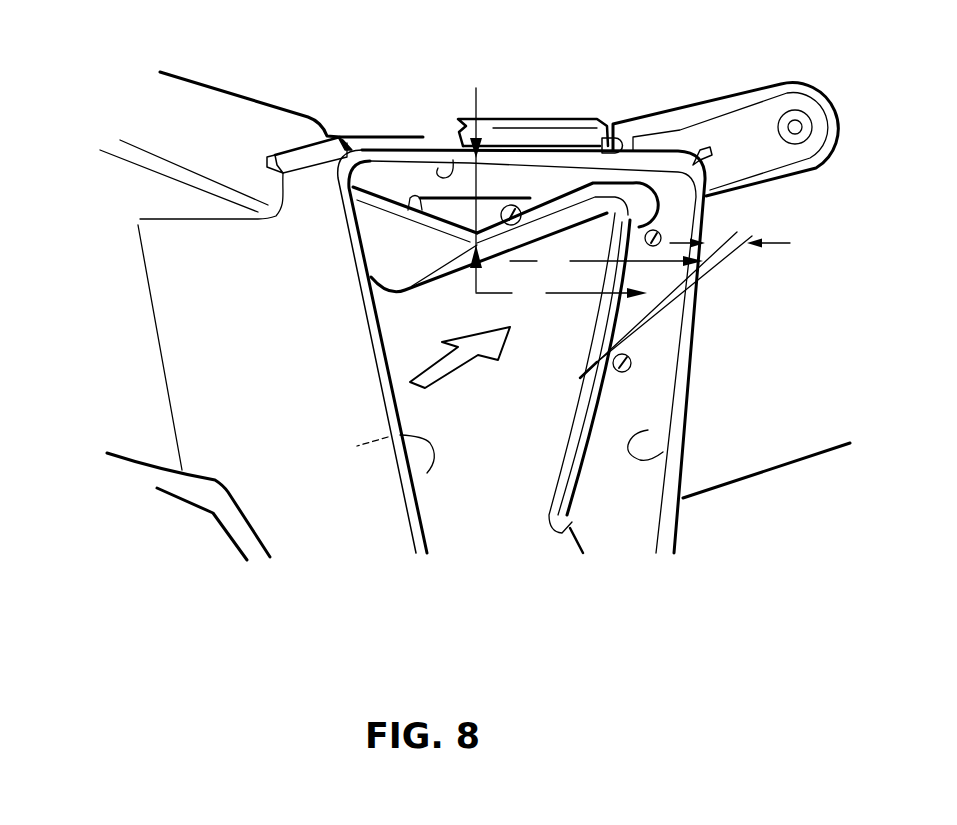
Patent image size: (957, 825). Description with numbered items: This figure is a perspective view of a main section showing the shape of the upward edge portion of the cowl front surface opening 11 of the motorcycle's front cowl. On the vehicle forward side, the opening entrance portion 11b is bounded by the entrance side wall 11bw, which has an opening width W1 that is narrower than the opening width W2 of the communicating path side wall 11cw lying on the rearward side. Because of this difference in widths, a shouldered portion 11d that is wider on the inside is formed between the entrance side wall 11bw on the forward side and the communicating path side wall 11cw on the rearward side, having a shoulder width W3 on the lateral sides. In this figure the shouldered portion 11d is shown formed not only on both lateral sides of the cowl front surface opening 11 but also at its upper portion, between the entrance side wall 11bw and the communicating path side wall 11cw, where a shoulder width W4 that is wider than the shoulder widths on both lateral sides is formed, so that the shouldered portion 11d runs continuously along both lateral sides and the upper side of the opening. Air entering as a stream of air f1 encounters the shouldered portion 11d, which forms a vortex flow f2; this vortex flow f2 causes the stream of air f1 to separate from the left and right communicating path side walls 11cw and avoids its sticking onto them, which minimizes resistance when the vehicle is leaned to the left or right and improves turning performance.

The cowl front surface opening 11 is at (500, 405).
The opening entrance portion 11b is at (598, 283).
The entrance side wall 11bw is at (413, 277).
The communicating path side wall 11cw is at (453, 160).
The shouldered portion 11d is at (477, 178).
The opening width W1 is at (561, 294).
The opening width W2 is at (606, 262).
The shoulder width W3 is at (745, 244).
The shoulder width W4 is at (472, 178).
The stream of air f1 is at (460, 365).
The vortex flow f2 is at (521, 213).